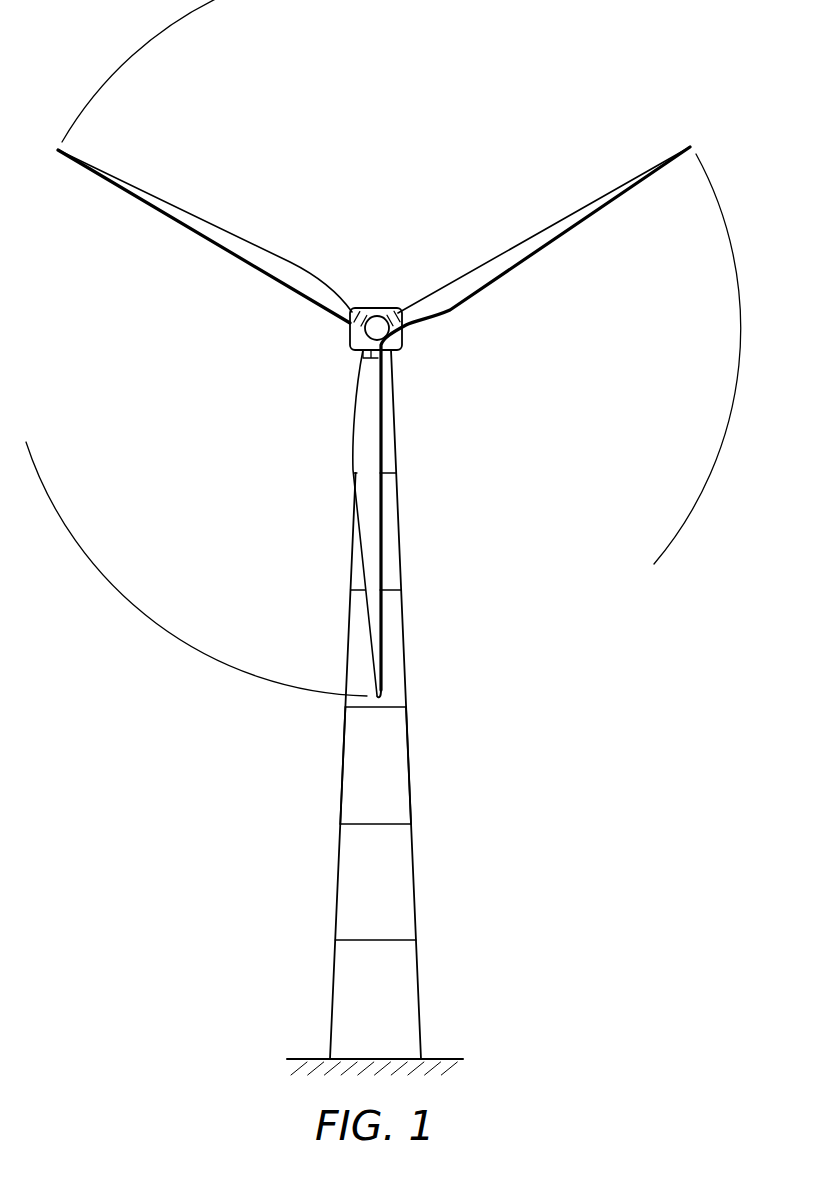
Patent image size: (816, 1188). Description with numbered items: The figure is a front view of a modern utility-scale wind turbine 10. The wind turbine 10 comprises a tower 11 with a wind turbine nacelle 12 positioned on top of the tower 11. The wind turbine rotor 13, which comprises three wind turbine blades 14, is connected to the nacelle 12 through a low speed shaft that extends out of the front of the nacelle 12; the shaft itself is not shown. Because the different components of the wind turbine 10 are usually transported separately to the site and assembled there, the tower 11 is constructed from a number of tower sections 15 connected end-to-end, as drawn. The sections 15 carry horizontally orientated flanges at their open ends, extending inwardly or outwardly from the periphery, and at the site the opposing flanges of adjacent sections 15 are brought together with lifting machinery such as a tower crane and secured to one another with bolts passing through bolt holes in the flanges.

The wind turbine 10 is at (180, 808).
The tower 11 is at (413, 882).
The wind turbine nacelle 12 is at (407, 338).
The wind turbine rotor 13 is at (377, 325).
The wind turbine blades 14 is at (372, 520).
The tower sections 15 is at (405, 757).